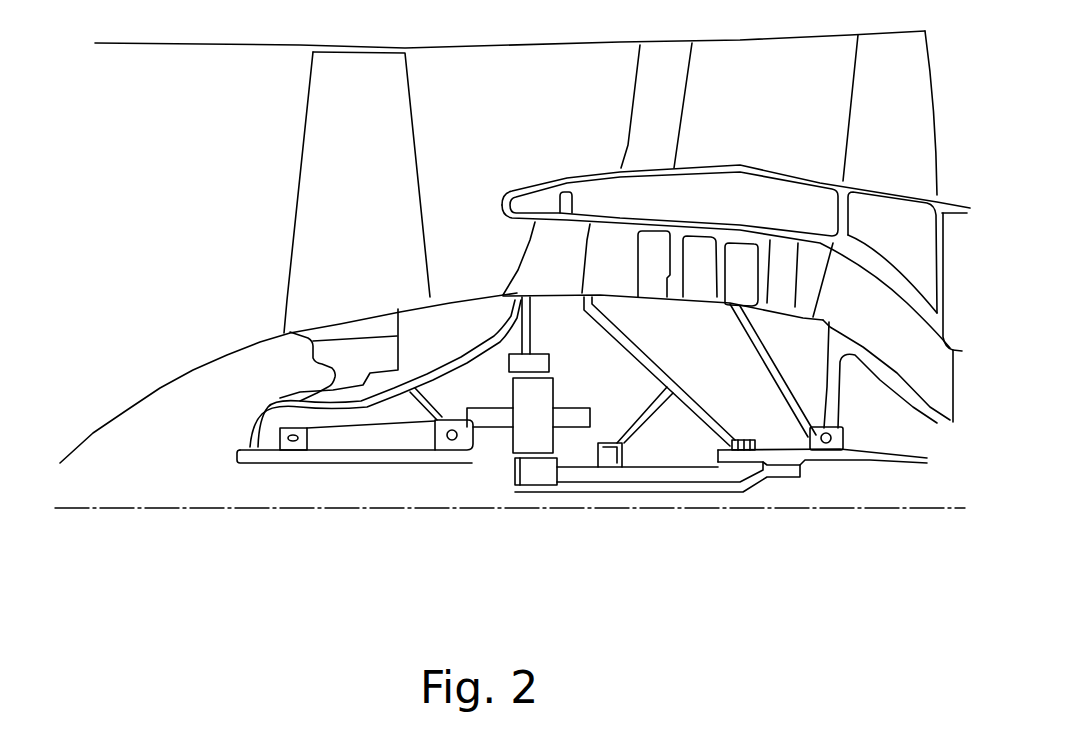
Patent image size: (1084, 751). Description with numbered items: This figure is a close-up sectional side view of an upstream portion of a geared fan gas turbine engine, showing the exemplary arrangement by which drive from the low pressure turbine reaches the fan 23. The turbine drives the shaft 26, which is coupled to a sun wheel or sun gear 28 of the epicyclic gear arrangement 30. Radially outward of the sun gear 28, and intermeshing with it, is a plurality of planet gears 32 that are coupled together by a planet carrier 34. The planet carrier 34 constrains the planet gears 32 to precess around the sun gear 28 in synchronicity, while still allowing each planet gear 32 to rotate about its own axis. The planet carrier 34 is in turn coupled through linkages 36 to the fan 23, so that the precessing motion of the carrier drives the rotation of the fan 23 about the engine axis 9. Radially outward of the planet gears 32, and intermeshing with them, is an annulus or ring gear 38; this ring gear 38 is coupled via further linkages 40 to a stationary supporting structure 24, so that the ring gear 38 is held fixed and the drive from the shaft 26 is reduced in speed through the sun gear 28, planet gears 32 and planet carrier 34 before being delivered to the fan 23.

The engine axis 9 is at (273, 508).
The fan 23 is at (317, 196).
The stationary supporting structure 24 is at (542, 253).
The shaft 26 is at (700, 483).
The sun gear 28 is at (533, 473).
The epicyclic gear arrangement 30 is at (480, 490).
The planet gears 32 is at (518, 440).
The planet carrier 34 is at (579, 460).
The linkages 36 is at (478, 438).
The ring gear 38 is at (510, 365).
The linkages 40 is at (533, 337).